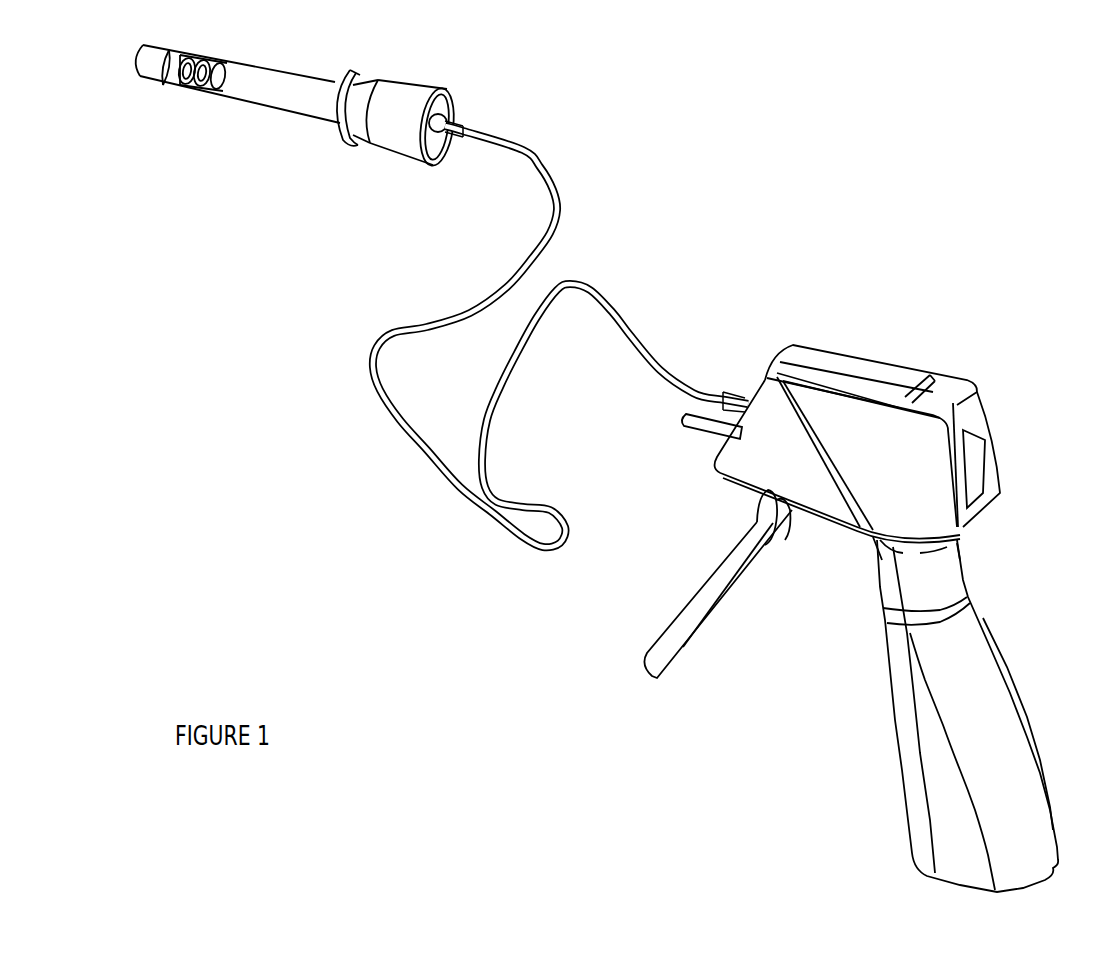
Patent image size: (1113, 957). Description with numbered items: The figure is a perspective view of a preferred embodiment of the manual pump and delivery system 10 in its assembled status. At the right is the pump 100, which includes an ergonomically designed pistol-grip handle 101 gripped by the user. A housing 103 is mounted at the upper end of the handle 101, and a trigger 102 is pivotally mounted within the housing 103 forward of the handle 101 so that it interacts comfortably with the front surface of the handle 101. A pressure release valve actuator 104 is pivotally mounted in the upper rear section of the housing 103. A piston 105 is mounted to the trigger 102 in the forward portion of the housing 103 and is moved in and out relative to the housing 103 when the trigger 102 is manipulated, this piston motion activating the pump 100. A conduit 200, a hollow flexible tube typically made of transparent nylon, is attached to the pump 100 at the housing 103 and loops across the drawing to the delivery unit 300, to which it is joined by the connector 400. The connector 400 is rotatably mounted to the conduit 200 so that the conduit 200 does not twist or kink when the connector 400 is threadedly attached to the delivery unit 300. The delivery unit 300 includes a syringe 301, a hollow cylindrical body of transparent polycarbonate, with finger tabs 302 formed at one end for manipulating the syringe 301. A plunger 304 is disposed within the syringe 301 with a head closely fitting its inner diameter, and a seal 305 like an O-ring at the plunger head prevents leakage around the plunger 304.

The pump and delivery system 10 is at (578, 457).
The pump 100 is at (823, 597).
The pistol-grip handle 101 is at (910, 716).
The trigger 102 is at (718, 607).
The housing 103 is at (869, 431).
The pressure release valve actuator 104 is at (1011, 429).
The piston 105 is at (659, 497).
The conduit 200 is at (561, 334).
The delivery unit 300 is at (274, 171).
The syringe 301 is at (232, 126).
The finger tabs 302 is at (399, 84).
The plunger 304 is at (284, 171).
The seal 305 is at (157, 112).
The connector 400 is at (505, 95).